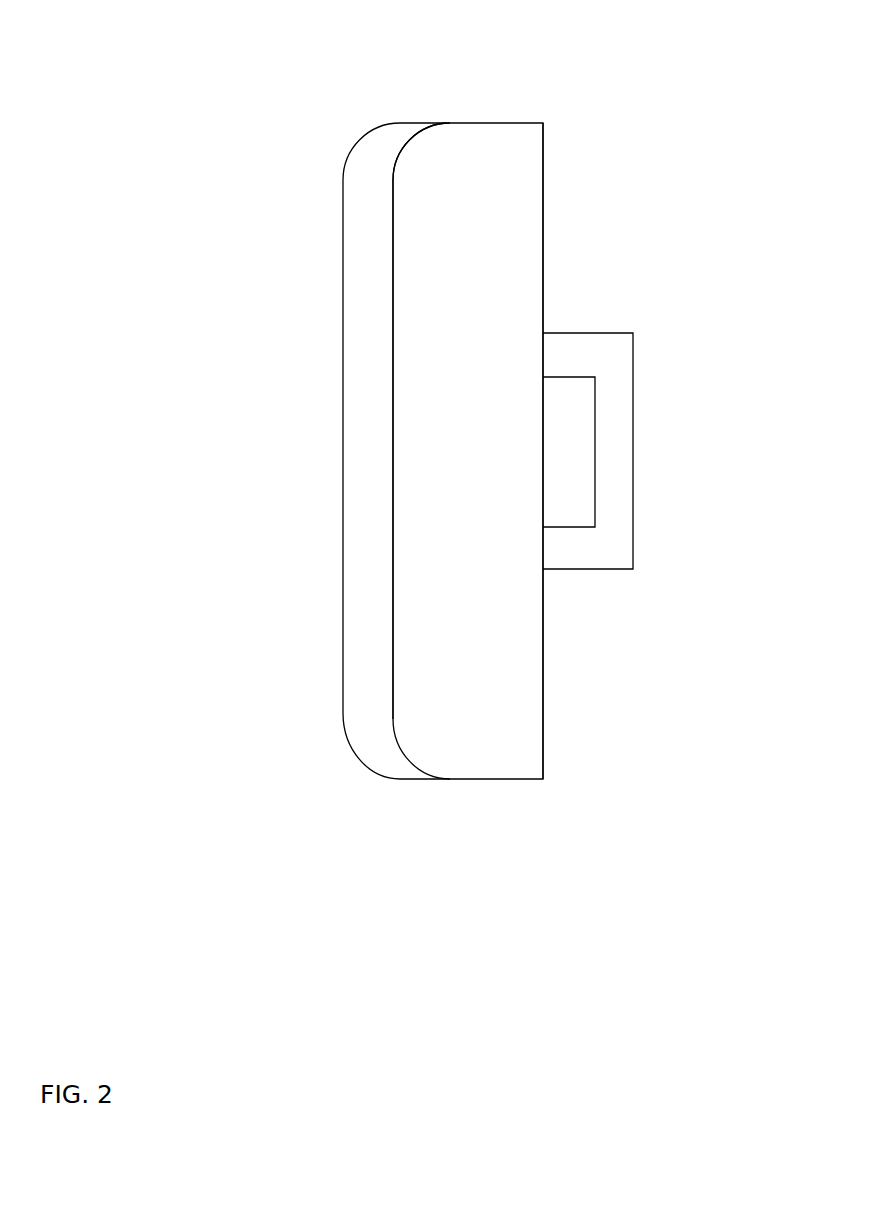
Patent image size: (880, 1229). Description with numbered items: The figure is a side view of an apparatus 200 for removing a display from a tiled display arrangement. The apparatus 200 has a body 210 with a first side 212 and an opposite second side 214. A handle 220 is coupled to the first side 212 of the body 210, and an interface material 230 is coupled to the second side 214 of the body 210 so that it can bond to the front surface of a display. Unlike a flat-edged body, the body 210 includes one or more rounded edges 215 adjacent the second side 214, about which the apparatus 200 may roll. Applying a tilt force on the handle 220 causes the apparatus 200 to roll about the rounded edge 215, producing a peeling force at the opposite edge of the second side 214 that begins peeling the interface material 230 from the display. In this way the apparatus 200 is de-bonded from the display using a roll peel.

The apparatus 200 is at (255, 106).
The body 210 is at (492, 175).
The first side 212 is at (543, 270).
The second side 214 is at (393, 255).
The rounded edge 215 is at (420, 138).
The handle 220 is at (604, 349).
The interface material 230 is at (367, 480).